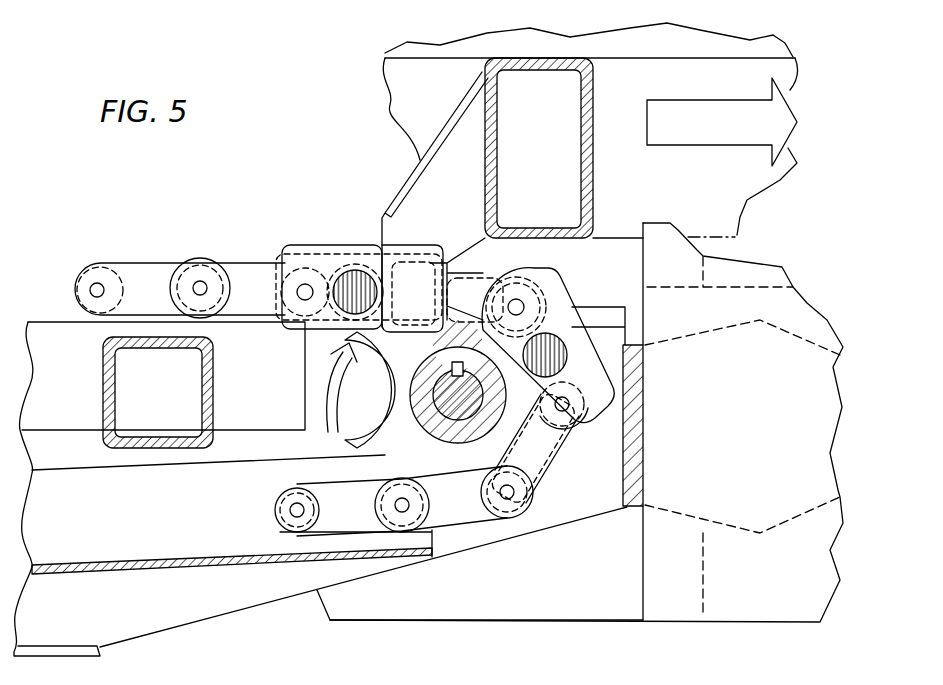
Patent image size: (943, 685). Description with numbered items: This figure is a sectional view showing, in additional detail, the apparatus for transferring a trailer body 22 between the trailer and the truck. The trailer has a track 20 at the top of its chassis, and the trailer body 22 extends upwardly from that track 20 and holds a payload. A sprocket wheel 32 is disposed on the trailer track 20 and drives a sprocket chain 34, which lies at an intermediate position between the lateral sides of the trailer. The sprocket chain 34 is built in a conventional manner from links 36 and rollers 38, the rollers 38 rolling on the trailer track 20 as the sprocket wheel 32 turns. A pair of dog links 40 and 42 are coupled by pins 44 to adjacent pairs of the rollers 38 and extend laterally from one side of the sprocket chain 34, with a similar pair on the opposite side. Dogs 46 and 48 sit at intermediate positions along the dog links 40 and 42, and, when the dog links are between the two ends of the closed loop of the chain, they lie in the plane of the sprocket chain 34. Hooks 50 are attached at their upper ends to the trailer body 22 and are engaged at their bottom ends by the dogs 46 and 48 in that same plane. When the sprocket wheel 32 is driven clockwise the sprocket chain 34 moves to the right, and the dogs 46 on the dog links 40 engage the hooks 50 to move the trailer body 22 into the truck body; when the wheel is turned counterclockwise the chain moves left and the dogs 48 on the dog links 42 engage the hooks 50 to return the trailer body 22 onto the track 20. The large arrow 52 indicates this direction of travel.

The track 20 is at (55, 340).
The trailer body 22 is at (403, 52).
The sprocket wheel 32 is at (378, 362).
The sprocket chain 34 is at (240, 270).
The links 36 is at (133, 267).
The rollers 38 is at (88, 262).
The dog link 40 is at (317, 245).
The dog link 42 is at (560, 298).
The pins 44 is at (305, 300).
The dog 46 is at (363, 270).
The dog 48 is at (550, 345).
The hooks 50 is at (413, 197).
The direction of travel arrow 52 is at (672, 147).